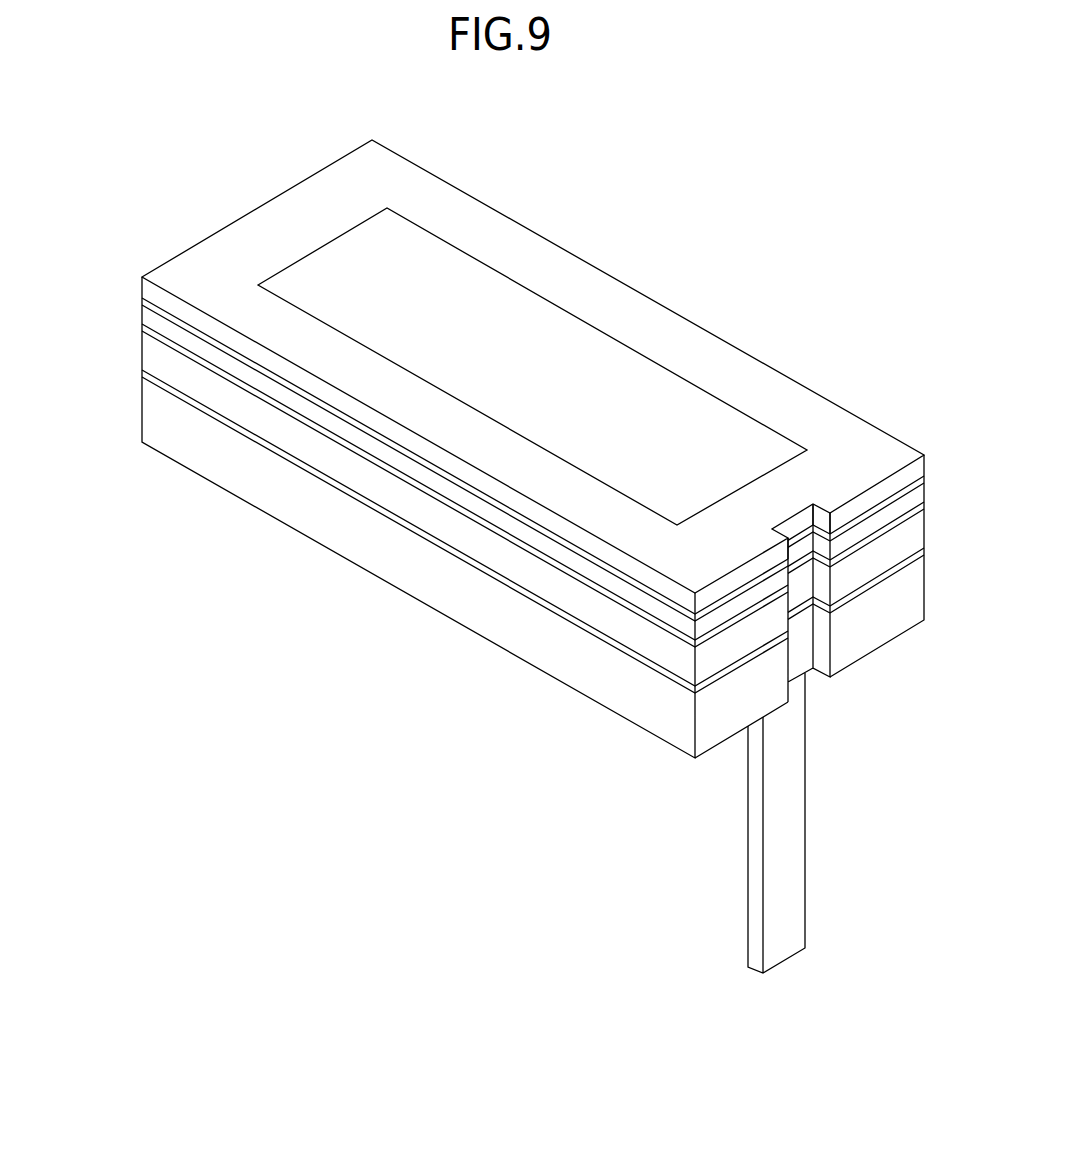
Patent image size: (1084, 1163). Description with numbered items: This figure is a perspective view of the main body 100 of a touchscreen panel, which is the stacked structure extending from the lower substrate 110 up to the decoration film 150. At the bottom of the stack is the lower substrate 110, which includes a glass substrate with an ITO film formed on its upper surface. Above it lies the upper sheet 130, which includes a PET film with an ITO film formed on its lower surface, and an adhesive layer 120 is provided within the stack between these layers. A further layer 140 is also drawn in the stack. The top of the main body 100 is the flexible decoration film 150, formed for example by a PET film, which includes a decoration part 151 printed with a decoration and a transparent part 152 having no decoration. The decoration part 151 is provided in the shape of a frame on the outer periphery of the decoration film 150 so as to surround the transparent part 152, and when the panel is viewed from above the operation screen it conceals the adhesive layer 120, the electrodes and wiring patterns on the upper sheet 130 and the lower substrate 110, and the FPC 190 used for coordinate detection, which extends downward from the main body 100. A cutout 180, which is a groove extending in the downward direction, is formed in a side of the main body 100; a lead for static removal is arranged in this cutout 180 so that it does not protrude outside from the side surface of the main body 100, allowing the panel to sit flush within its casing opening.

The main body 100 is at (828, 172).
The lower substrate 110 is at (152, 405).
The adhesive layer 120 is at (142, 353).
The upper sheet 130 is at (142, 321).
The upper electrode layer 140 is at (142, 297).
The decoration film 150 is at (142, 283).
The decoration part 151 is at (286, 223).
The transparent part 152 is at (673, 388).
The cutout 180 is at (822, 653).
The FPC 190 is at (793, 877).